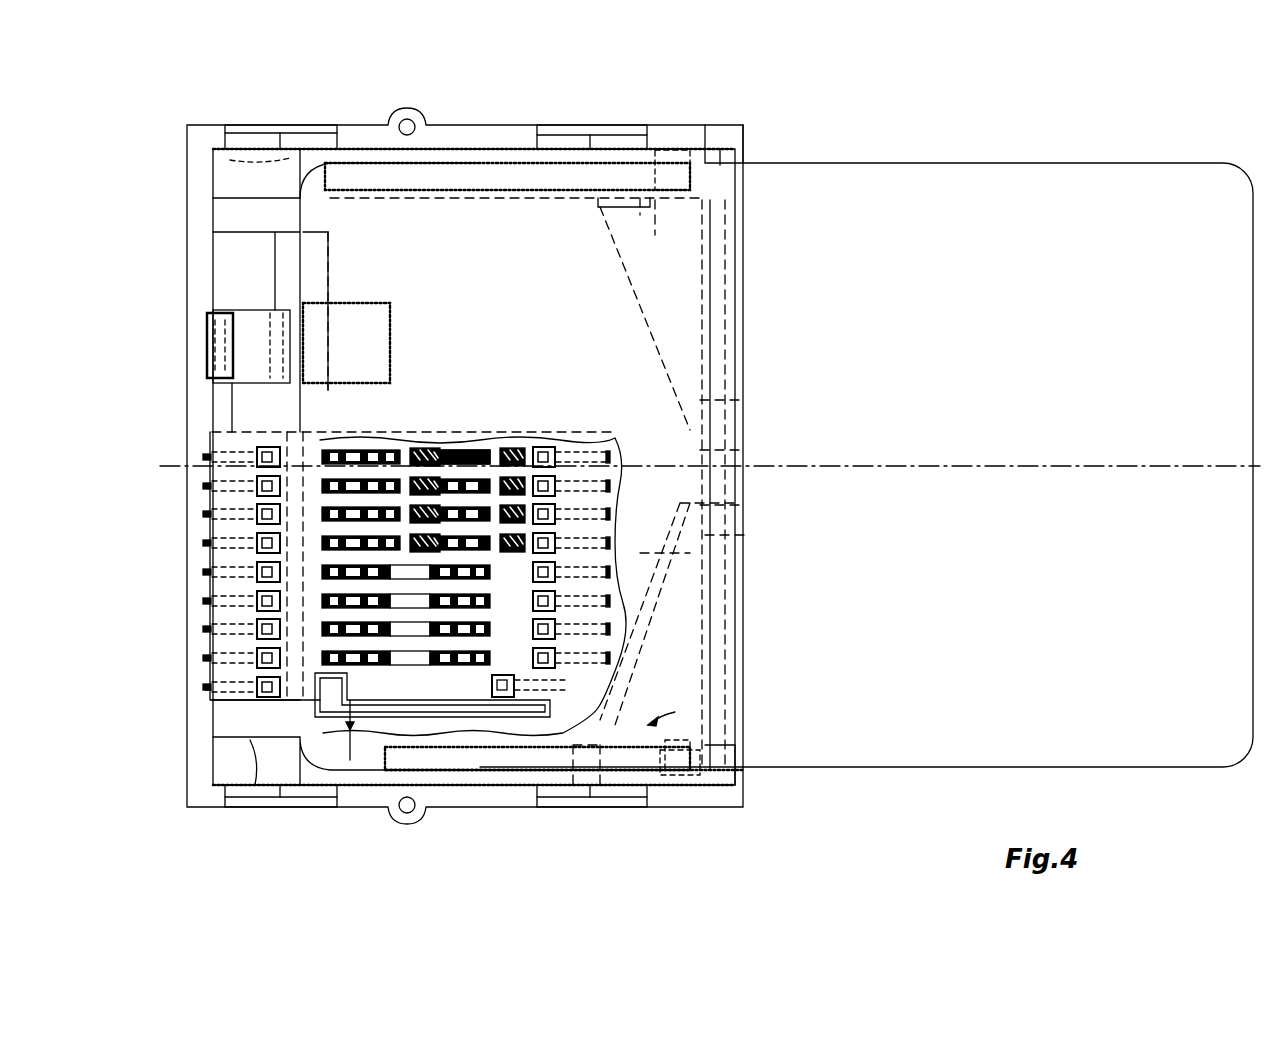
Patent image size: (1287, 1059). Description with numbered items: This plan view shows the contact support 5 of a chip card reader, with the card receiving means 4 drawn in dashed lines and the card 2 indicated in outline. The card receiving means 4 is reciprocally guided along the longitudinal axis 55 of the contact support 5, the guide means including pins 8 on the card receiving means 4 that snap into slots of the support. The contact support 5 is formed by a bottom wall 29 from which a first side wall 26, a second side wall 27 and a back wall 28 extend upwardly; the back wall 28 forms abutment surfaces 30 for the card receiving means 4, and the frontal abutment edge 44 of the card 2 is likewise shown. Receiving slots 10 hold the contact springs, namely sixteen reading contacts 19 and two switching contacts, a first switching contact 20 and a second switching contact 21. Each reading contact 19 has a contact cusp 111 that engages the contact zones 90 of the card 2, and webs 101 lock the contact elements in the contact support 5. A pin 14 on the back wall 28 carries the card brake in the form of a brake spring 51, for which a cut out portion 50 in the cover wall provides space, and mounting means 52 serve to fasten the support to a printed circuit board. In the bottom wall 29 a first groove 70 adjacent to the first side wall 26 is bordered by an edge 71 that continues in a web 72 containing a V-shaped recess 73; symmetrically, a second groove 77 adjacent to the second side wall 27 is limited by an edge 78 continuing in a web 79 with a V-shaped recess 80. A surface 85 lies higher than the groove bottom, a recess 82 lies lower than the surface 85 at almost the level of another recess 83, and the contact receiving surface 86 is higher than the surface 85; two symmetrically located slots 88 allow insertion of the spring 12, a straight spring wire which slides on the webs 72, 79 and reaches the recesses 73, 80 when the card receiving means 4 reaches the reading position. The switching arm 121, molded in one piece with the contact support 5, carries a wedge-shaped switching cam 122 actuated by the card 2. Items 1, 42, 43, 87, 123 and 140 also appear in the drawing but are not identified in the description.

The control apparatus 1 is at (753, 123).
The card 2 is at (985, 163).
The card receiving means 4 is at (290, 158).
The contact support 5 is at (185, 232).
The pins 8 is at (312, 160).
The receiving slots 10 is at (396, 462).
The spring 12 is at (735, 300).
The pin 14 is at (215, 355).
The reading contacts 19 is at (345, 462).
The first switching contact 20 is at (200, 695).
The second switching contact 21 is at (575, 790).
The first side wall 26 is at (480, 150).
The second side wall 27 is at (510, 800).
The back wall 28 is at (210, 528).
The bottom wall 29 is at (612, 490).
The abutment surfaces 30 is at (232, 186).
The upper guide 42 is at (713, 160).
The lower guide 43 is at (722, 790).
The abutment edge 44 is at (300, 255).
The cut out portion 50 is at (395, 335).
The brake spring 51 is at (250, 333).
The mounting means 52 is at (409, 120).
The longitudinal axis 55 is at (935, 463).
The first groove 70 is at (242, 167).
The edge 71 is at (288, 178).
The web 72 is at (610, 225).
The V-shaped recess 73 is at (645, 215).
The second groove 77 is at (270, 745).
The edge 78 is at (252, 785).
The web 79 is at (661, 618).
The V-shaped recess 80 is at (710, 705).
The recess 82 is at (722, 268).
The recess 83 is at (700, 585).
The surface 85 is at (690, 360).
The contact receiving surface 86 is at (720, 540).
The contact surface 87 is at (735, 445).
The slots 88 is at (730, 405).
The contact zones 90 is at (428, 452).
The webs 101 is at (270, 447).
The contact cusp 111 is at (490, 458).
The switching arm 121 is at (350, 765).
The switching cam 122 is at (313, 700).
The base plate 123 is at (445, 712).
The latch hook 140 is at (668, 165).